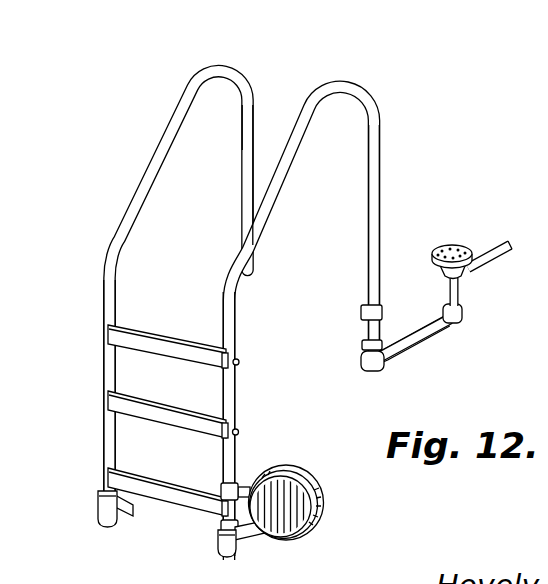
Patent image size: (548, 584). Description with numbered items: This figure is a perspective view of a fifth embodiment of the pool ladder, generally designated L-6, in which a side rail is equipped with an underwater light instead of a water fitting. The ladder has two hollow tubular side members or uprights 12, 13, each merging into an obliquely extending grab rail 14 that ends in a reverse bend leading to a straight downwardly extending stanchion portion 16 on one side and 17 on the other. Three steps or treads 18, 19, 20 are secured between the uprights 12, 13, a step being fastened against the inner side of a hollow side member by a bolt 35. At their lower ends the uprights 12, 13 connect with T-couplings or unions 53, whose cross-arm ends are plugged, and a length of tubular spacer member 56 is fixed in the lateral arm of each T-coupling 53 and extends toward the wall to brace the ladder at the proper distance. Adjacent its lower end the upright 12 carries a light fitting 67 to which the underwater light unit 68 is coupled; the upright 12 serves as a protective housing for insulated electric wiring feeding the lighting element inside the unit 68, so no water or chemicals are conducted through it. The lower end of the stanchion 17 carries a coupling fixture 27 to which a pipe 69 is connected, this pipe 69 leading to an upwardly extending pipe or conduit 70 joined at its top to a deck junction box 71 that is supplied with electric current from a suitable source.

The ladder structure L-6 is at (382, 146).
The side member or upright 12 is at (237, 329).
The side member or upright 13 is at (104, 301).
The grab rail 14 is at (158, 147).
The stanchion portion 16 is at (242, 163).
The stanchion portion 17 is at (381, 204).
The step or tread 18 is at (151, 333).
The step or tread 19 is at (148, 401).
The step or tread 20 is at (148, 478).
The coupling fixture 27 is at (361, 314).
The bolt 35 is at (238, 431).
The T-coupling or union 53 is at (101, 528).
The spacer member 56 is at (133, 512).
The light fitting 67 is at (240, 482).
The underwater light unit 68 is at (324, 514).
The pipe 69 is at (424, 340).
The upwardly extending pipe or conduit 70 is at (459, 297).
The deck junction box 71 is at (447, 246).